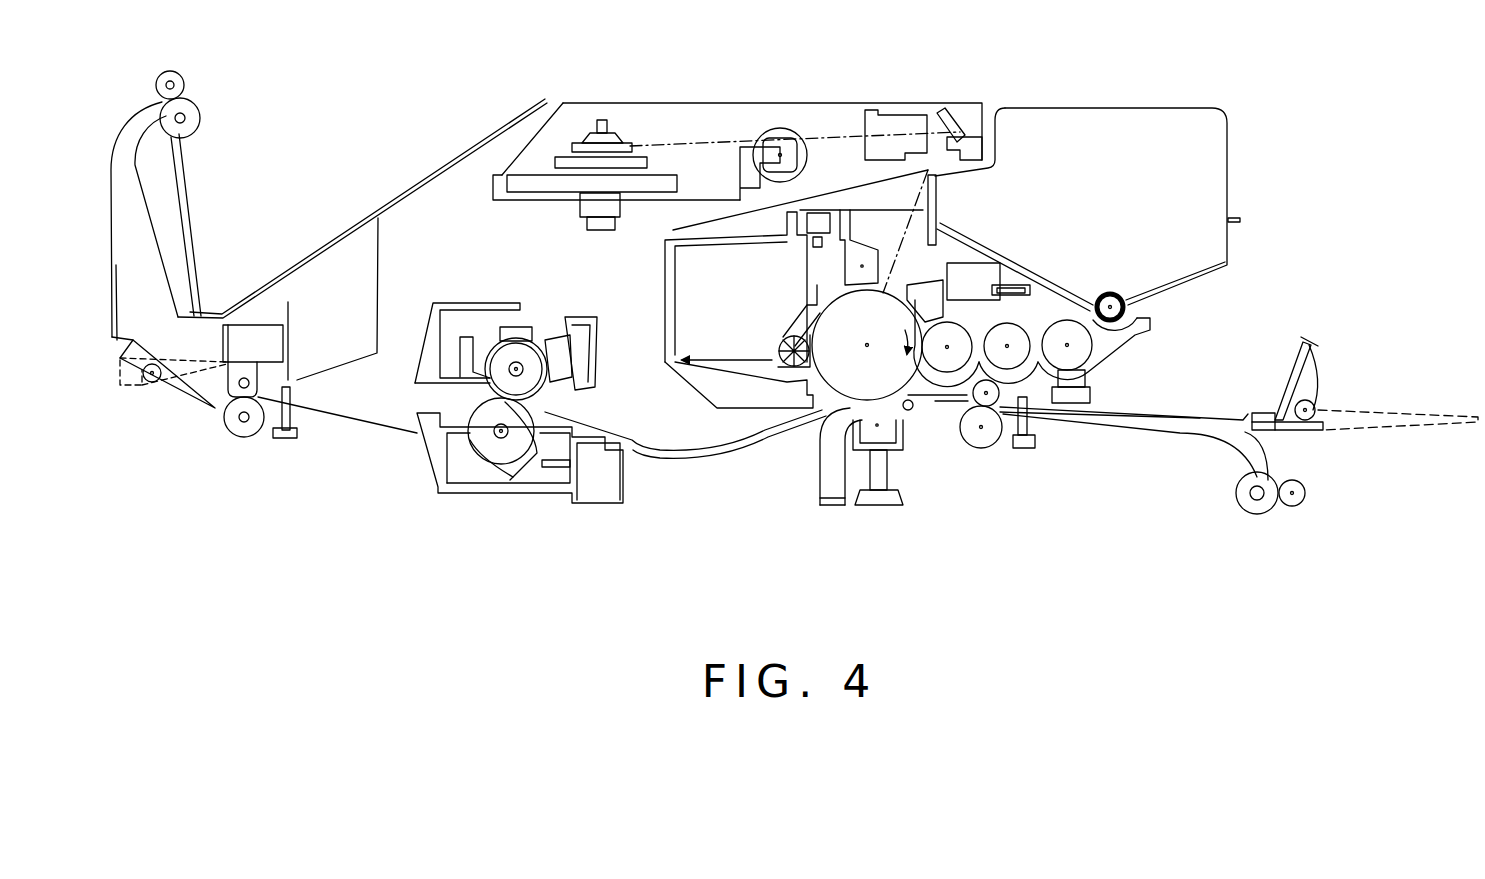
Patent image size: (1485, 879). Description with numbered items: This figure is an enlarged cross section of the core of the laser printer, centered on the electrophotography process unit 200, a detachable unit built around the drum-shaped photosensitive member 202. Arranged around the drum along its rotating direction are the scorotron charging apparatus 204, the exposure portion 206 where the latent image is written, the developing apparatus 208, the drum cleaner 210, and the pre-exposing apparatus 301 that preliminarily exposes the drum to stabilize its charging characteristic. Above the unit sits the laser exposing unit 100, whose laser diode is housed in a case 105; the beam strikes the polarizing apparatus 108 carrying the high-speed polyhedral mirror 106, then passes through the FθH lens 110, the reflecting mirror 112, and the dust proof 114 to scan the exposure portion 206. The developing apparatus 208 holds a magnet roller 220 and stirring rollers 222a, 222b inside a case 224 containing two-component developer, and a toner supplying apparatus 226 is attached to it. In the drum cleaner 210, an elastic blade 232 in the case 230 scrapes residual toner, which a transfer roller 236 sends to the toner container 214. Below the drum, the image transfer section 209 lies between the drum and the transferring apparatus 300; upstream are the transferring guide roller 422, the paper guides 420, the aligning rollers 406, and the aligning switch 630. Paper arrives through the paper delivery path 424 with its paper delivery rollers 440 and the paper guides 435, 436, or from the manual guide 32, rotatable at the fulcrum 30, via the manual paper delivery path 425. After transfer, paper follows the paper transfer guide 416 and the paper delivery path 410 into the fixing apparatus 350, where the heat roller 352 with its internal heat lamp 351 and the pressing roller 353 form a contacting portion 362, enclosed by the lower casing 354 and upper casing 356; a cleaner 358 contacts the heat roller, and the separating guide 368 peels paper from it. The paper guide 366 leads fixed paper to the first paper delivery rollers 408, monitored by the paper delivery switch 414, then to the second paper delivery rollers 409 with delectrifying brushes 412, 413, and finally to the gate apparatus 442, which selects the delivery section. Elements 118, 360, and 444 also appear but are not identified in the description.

The fulcrum 30 is at (1318, 404).
The manual guide 32 is at (1437, 426).
The laser exposing unit 100 is at (750, 101).
The case 105 is at (497, 180).
The polyhedral mirror 106 is at (625, 142).
The polarizing apparatus 108 is at (596, 122).
The FθH lens 110 is at (912, 114).
The reflecting mirror 112 is at (952, 113).
The dust proof 114 is at (968, 146).
The lens 118 is at (784, 128).
The electrophotography process unit 200 is at (650, 290).
The photosensitive member 202 is at (841, 404).
The charging apparatus 204 is at (862, 258).
The exposure portion 206 is at (917, 231).
The developing apparatus 208 is at (956, 335).
The image transfer section 209 is at (898, 452).
The drum cleaner 210 is at (727, 262).
The toner container 214 is at (678, 268).
The magnet roller 220 is at (950, 290).
The stirring roller 222a is at (1015, 330).
The stirring roller 222b is at (1070, 322).
The case 224 is at (1112, 357).
The toner supplying apparatus 226 is at (1112, 106).
The case 230 is at (665, 356).
The elastic blade 232 is at (805, 308).
The transfer roller 236 is at (778, 351).
The transferring apparatus 300 is at (858, 465).
The pre-exposing apparatus 301 is at (817, 236).
The fixing apparatus 350 is at (438, 302).
The heat lamp 351 is at (500, 360).
The heat roller 352 is at (508, 338).
The pressing roller 353 is at (488, 456).
The lower casing 354 is at (600, 497).
The upper casing 356 is at (597, 362).
The cleaner 358 is at (540, 336).
The guide plate 360 is at (578, 388).
The contacting portion 362 is at (525, 455).
The paper guide 366 is at (368, 422).
The guide for separating paper 368 is at (456, 372).
The aligning rollers 406 is at (990, 441).
The first paper delivery rollers 408 is at (248, 438).
The second paper delivery rollers 409 is at (202, 118).
The paper delivery path 410 is at (726, 448).
The delectrifying brush 412 is at (233, 400).
The delectrifying brush 413 is at (186, 86).
The paper delivery switch 414 is at (289, 438).
The paper transfer guide 416 is at (656, 450).
The paper guides 420 is at (970, 448).
The transferring guide roller 422 is at (913, 411).
The paper delivery path 424 is at (1255, 467).
The paper delivery path 425 is at (1286, 431).
The paper guide 435 is at (1210, 433).
The paper guide 436 is at (1186, 421).
The paper delivery rollers 440 is at (1304, 497).
The gate apparatus 442 is at (180, 407).
The sheet feed roller 444 is at (141, 386).
The aligning switch 630 is at (1026, 447).